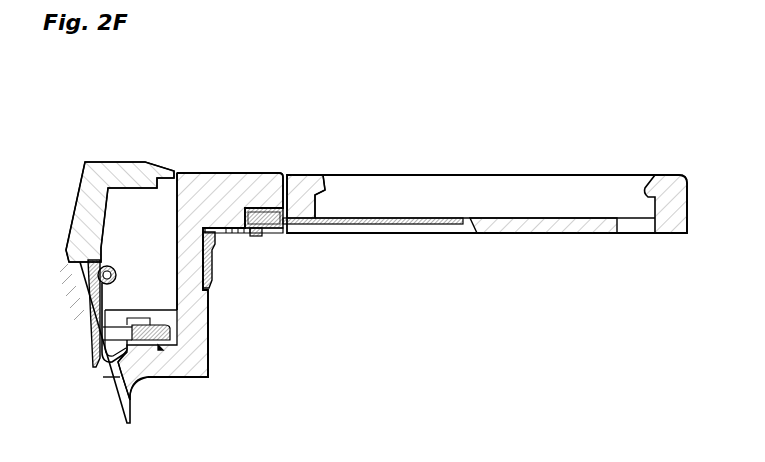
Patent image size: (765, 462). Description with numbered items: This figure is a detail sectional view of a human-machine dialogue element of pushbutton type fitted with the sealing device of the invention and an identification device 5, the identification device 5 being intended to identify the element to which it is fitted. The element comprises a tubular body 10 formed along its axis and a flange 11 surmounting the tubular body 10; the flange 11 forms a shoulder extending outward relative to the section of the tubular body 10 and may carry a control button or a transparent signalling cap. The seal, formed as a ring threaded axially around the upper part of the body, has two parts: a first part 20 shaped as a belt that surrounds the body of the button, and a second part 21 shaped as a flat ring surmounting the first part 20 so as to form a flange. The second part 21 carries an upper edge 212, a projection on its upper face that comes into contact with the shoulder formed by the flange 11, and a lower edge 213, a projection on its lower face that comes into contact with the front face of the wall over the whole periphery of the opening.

The identification device 5 is at (307, 183).
The tubular body 10 is at (203, 352).
The flange 11 is at (215, 178).
The first part 20 is at (210, 273).
The second part 21 is at (284, 222).
The upper edge 212 is at (258, 183).
The lower edge 213 is at (260, 236).